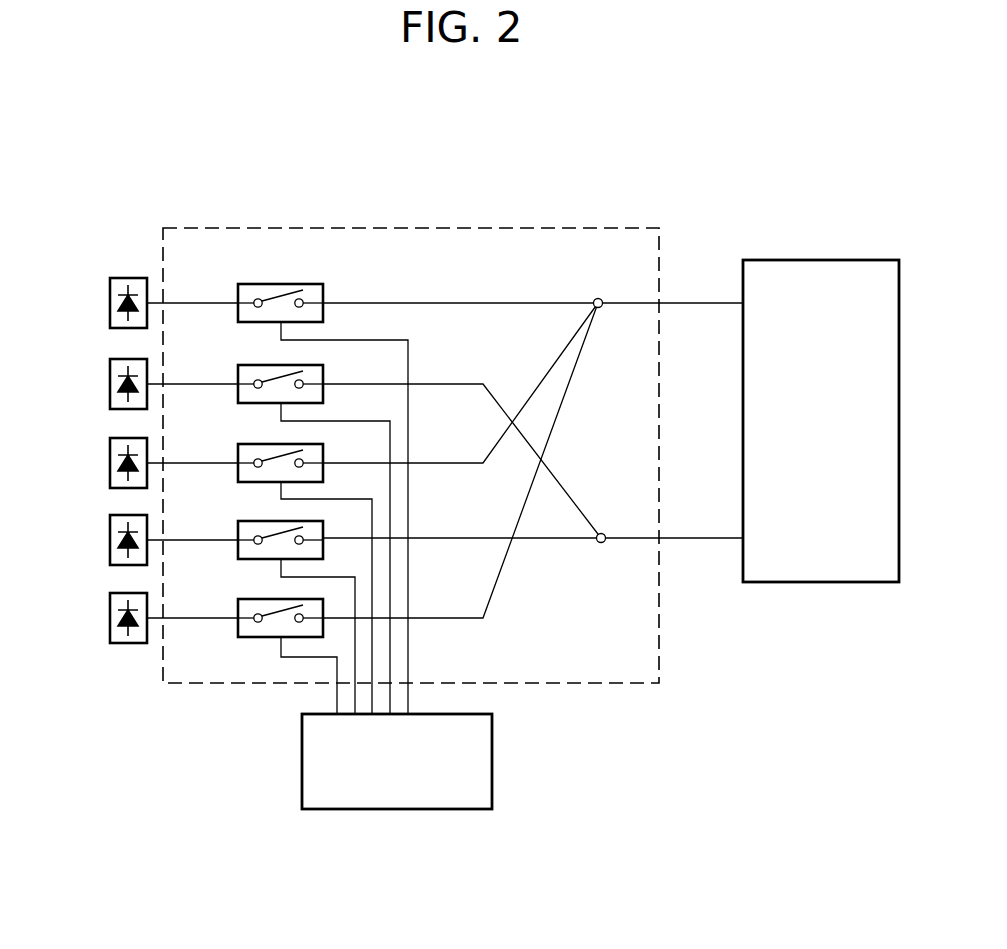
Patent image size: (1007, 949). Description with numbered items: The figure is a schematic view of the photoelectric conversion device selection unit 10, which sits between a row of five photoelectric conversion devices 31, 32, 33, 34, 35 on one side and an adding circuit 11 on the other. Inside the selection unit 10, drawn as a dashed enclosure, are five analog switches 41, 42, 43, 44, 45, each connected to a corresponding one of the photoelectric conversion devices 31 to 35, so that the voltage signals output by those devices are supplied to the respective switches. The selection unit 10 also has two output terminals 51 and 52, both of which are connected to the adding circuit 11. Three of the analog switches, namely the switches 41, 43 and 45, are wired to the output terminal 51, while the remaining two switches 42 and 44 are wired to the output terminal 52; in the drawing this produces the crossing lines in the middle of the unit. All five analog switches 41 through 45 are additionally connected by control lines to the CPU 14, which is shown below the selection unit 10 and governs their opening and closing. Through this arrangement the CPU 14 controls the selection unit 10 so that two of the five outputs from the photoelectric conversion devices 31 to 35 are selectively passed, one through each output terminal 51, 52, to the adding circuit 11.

The photoelectric conversion device selection unit 10 is at (576, 228).
The adding circuit 11 is at (818, 260).
The CPU 14 is at (302, 758).
The photoelectric conversion device 31 is at (110, 305).
The photoelectric conversion device 32 is at (110, 386).
The photoelectric conversion device 33 is at (110, 465).
The photoelectric conversion device 34 is at (110, 542).
The photoelectric conversion device 35 is at (110, 620).
The analog switch 41 is at (239, 289).
The analog switch 42 is at (239, 368).
The analog switch 43 is at (239, 448).
The analog switch 44 is at (239, 524).
The analog switch 45 is at (239, 603).
The output terminal 51 is at (602, 299).
The output terminal 52 is at (604, 543).